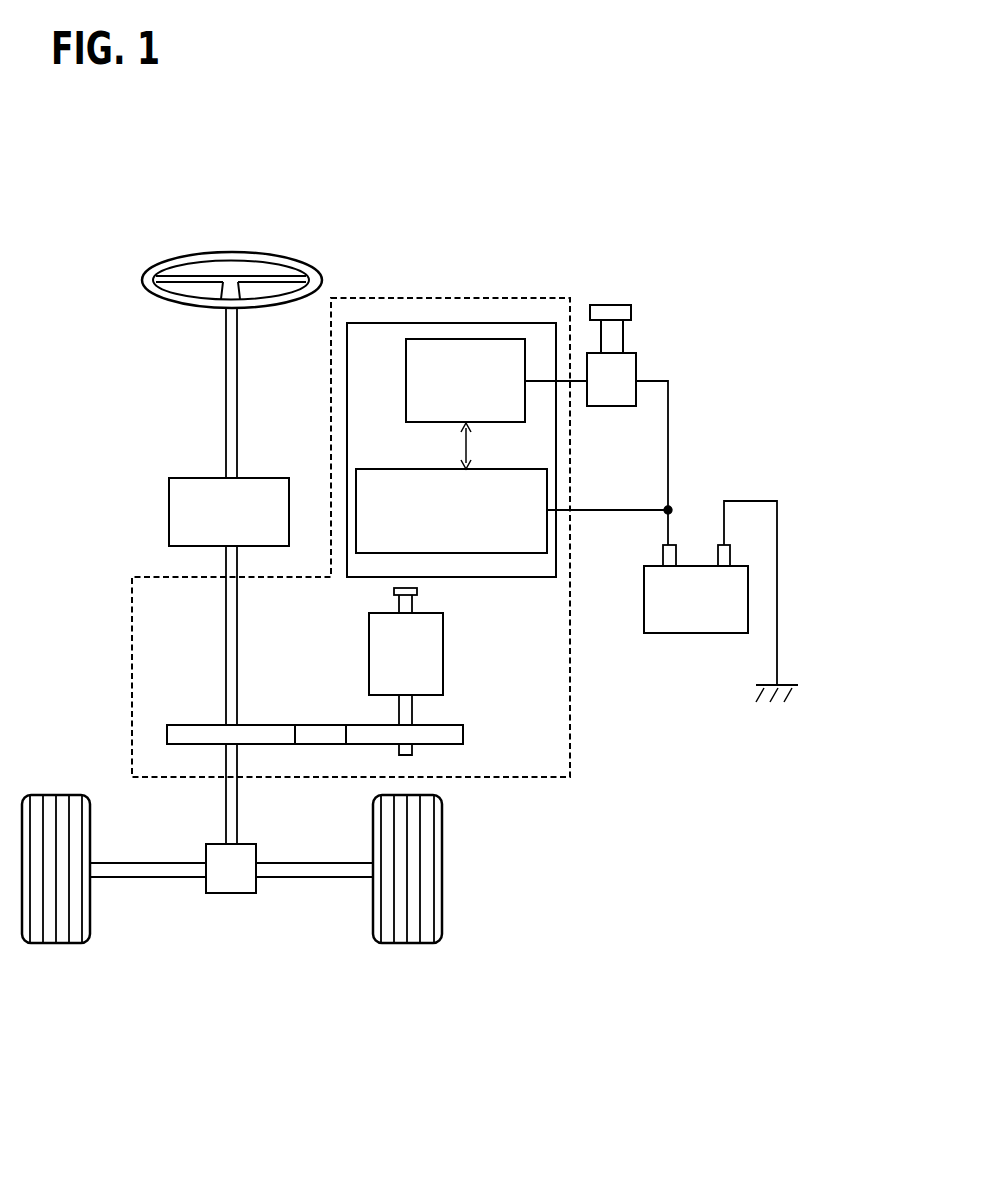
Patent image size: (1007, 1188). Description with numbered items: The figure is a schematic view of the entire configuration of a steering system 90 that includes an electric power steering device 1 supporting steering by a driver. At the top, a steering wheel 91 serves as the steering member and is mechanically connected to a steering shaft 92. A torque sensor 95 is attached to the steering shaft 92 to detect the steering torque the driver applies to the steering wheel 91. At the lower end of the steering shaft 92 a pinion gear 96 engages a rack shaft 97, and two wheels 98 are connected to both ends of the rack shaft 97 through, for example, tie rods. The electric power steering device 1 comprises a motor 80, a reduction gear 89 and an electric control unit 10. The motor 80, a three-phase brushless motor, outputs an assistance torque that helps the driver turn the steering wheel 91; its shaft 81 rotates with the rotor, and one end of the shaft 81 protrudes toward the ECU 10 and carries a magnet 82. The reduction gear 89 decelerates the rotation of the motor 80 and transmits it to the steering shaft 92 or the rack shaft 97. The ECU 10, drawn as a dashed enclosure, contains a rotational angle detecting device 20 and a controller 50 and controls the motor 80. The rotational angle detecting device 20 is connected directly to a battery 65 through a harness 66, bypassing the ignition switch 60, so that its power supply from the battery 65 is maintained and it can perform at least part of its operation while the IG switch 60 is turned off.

The electric power steering device 1 is at (539, 298).
The electric control unit (ECU) 10 is at (383, 323).
The rotational angle detecting device 20 is at (372, 469).
The controller 50 is at (406, 357).
The ignition switch (IG switch) 60 is at (638, 360).
The battery 65 is at (660, 633).
The harness 66 is at (605, 512).
The motor 80 is at (443, 628).
The shaft 81 is at (399, 604).
The magnet 82 is at (417, 591).
The reduction gear 89 is at (463, 733).
The steering system 90 is at (156, 985).
The steering wheel 91 is at (200, 252).
The steering shaft 92 is at (226, 350).
The torque sensor 95 is at (169, 491).
The pinion gear 96 is at (228, 893).
The rack shaft 97 is at (145, 877).
The wheels 98 is at (50, 795).